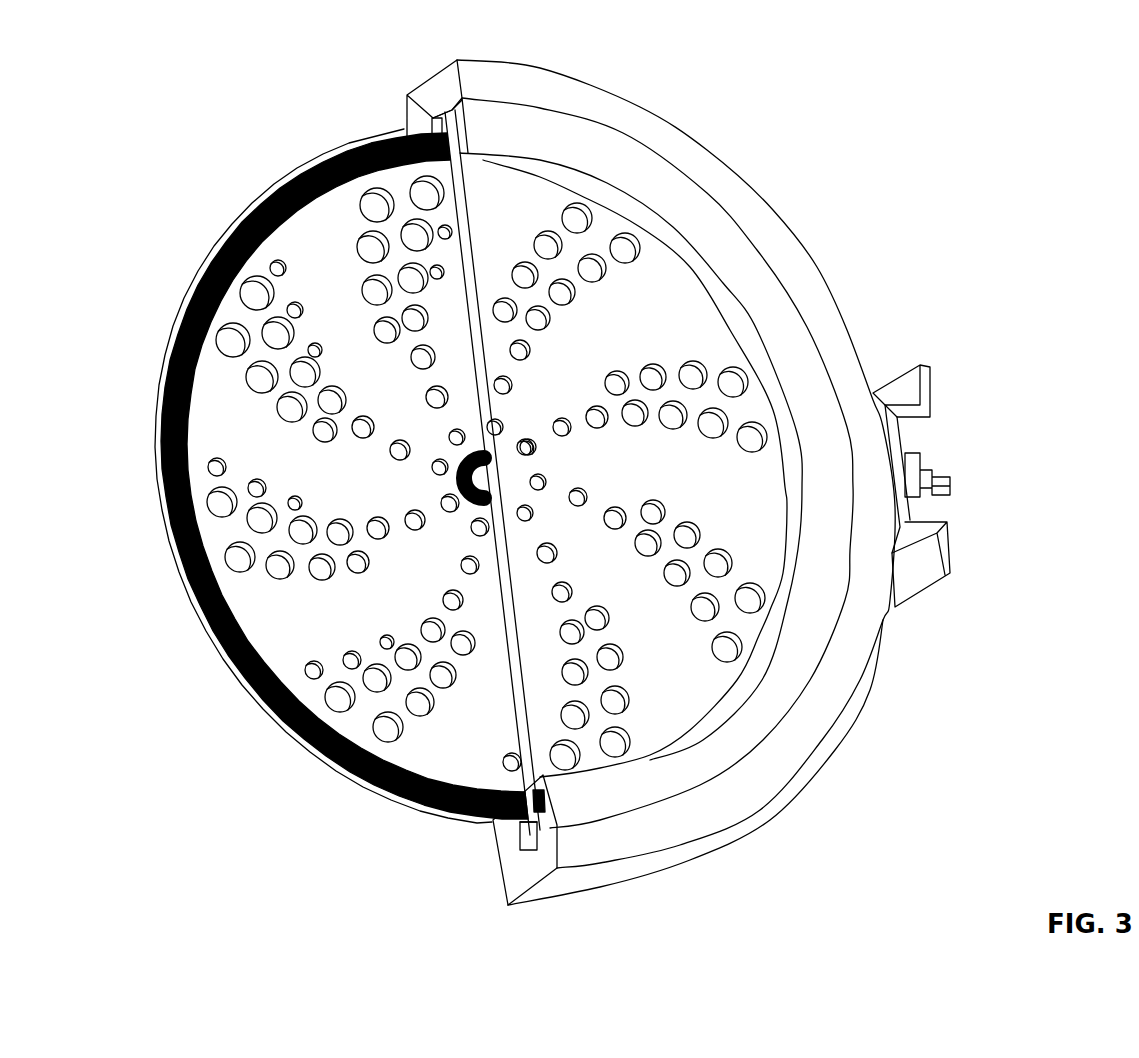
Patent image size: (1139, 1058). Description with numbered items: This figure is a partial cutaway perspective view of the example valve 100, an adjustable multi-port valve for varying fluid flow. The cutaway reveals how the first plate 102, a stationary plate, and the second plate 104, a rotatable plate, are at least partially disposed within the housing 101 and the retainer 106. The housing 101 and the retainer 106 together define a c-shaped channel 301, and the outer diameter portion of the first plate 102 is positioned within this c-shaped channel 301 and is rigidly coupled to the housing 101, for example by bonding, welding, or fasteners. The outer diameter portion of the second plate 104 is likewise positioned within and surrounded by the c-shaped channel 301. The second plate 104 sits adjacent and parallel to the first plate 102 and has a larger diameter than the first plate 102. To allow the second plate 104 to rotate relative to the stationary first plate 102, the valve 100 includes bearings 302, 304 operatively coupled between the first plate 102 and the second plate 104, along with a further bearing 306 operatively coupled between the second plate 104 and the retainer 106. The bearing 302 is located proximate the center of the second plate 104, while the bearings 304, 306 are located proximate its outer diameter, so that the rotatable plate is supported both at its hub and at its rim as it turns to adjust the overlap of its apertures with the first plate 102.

The valve 100 is at (681, 90).
The housing 101 is at (457, 60).
The first plate 102 is at (320, 267).
The second plate 104 is at (667, 297).
The retainer 106 is at (452, 100).
The c-shaped channel 301 is at (407, 96).
The bearing 302 is at (465, 493).
The bearing 304 is at (250, 680).
The bearing 306 is at (432, 130).